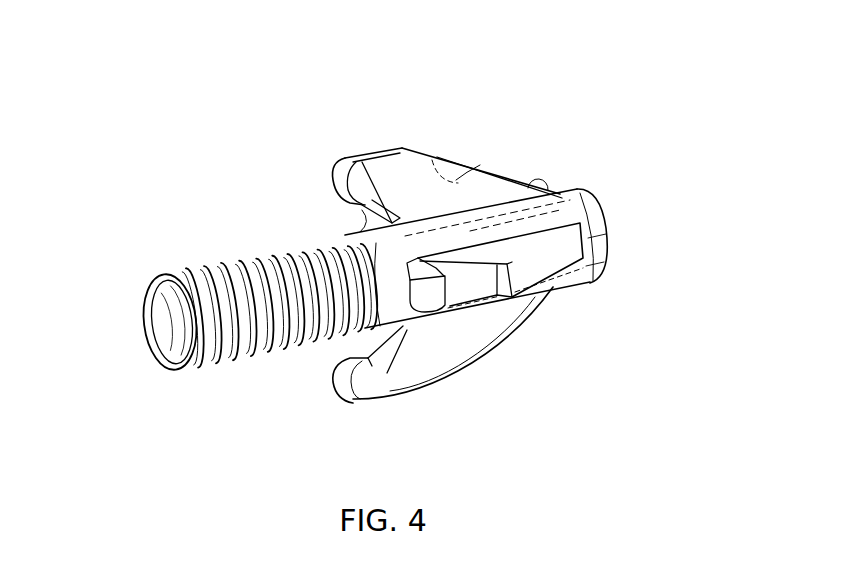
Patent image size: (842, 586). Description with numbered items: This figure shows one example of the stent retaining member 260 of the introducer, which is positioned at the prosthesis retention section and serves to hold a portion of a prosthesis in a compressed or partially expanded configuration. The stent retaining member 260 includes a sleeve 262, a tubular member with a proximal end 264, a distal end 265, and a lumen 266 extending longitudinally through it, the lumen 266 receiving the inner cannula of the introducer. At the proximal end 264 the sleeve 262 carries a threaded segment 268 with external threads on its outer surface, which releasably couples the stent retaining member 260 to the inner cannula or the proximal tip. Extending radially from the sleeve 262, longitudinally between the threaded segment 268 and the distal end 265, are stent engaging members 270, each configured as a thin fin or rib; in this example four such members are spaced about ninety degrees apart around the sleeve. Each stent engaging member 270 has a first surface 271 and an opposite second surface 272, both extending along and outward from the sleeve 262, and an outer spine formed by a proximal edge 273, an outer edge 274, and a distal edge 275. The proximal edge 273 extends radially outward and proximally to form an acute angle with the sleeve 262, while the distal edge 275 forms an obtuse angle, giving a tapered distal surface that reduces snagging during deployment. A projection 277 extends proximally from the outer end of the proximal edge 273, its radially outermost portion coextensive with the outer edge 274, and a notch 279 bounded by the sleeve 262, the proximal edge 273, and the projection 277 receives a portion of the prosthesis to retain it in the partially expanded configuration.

The stent retaining member 260 is at (218, 132).
The sleeve 262 is at (586, 200).
The proximal end 264 is at (147, 293).
The distal end 265 is at (607, 245).
The lumen 266 is at (173, 325).
The threaded segment 268 is at (212, 366).
The stent engaging member 270 is at (412, 183).
The first surface 271 is at (488, 168).
The second surface 272 is at (453, 180).
The proximal edge 273 is at (372, 248).
The outer edge 274 is at (365, 157).
The distal edge 275 is at (490, 170).
The projection 277 is at (333, 182).
The notch 279 is at (362, 207).